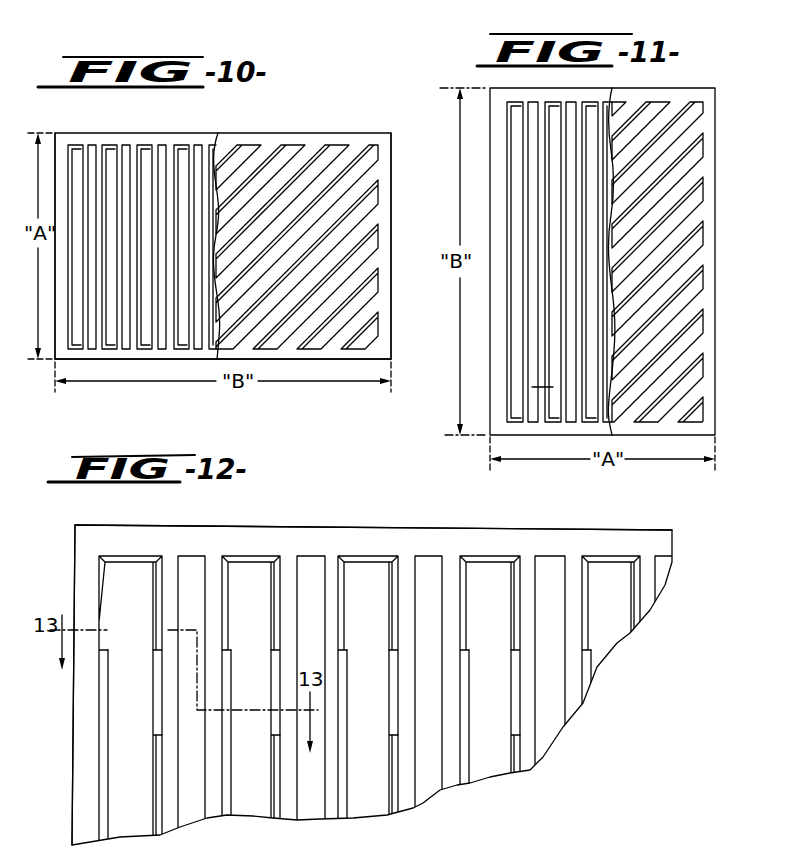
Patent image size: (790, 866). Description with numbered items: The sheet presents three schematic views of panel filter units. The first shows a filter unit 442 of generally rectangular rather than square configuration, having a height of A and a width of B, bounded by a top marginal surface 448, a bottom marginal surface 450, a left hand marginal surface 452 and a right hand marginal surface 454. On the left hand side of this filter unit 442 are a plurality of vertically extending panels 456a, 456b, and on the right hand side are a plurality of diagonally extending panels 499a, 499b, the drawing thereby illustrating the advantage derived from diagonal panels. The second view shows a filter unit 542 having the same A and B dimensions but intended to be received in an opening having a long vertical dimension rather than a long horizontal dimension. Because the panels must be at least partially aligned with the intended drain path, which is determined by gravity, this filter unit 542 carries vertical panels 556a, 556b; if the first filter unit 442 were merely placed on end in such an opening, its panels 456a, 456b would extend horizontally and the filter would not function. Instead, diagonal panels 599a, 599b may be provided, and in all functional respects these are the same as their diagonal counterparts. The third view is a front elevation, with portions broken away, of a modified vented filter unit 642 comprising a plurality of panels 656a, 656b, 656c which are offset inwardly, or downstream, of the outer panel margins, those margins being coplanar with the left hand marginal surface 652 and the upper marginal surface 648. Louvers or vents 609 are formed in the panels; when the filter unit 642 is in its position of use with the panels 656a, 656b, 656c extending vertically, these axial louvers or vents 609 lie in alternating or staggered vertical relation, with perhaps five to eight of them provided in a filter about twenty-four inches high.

In FIG. 10, the filter unit 442 is at (195, 128).
In FIG. 10, the top marginal surface 448 is at (137, 152).
In FIG. 10, the bottom marginal surface 450 is at (196, 355).
In FIG. 10, the left hand marginal surface 452 is at (60, 152).
In FIG. 10, the right hand marginal surface 454 is at (385, 212).
In FIG. 10, the vertically extending panel 456a is at (75, 345).
In FIG. 10, the vertically extending panel 456b is at (107, 345).
In FIG. 10, the diagonally extending panel 499a is at (247, 148).
In FIG. 10, the diagonally extending panel 499b is at (287, 148).
In FIG. 11, the filter unit 542 is at (728, 290).
In FIG. 11, the vertical panel 556a is at (515, 322).
In FIG. 11, the vertical panel 556b is at (515, 393).
In FIG. 11, the diagonal panel 599a is at (617, 103).
In FIG. 11, the diagonal panel 599b is at (662, 103).
In FIG. 12, the louvers or vents 609 is at (278, 580).
In FIG. 12, the filter unit 642 is at (208, 520).
In FIG. 12, the upper marginal surface 648 is at (268, 542).
In FIG. 12, the left hand marginal surface 652 is at (88, 560).
In FIG. 12, the panel 656a is at (122, 707).
In FIG. 12, the panel 656b is at (248, 793).
In FIG. 12, the panel 656c is at (372, 797).